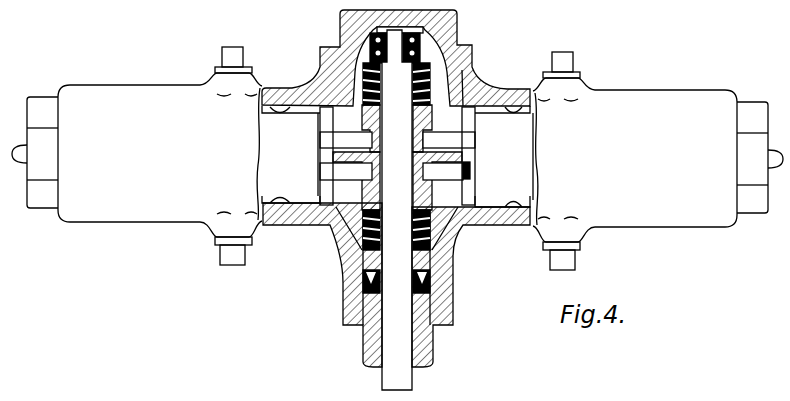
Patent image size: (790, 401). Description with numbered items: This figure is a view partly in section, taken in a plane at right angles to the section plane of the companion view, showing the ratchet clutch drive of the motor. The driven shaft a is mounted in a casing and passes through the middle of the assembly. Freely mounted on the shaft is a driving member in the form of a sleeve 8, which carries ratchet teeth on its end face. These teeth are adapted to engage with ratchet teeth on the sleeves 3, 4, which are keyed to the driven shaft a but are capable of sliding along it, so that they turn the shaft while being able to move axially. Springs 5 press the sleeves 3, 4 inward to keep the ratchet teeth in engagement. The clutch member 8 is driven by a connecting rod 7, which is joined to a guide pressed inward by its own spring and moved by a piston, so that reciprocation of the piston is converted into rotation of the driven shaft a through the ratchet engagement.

The sleeve 3 is at (458, 44).
The connecting rod 7 is at (433, 118).
The sleeve 8 is at (433, 196).
The sleeve 4 is at (429, 240).
The spring 5 is at (448, 238).
The driven shaft a is at (384, 372).